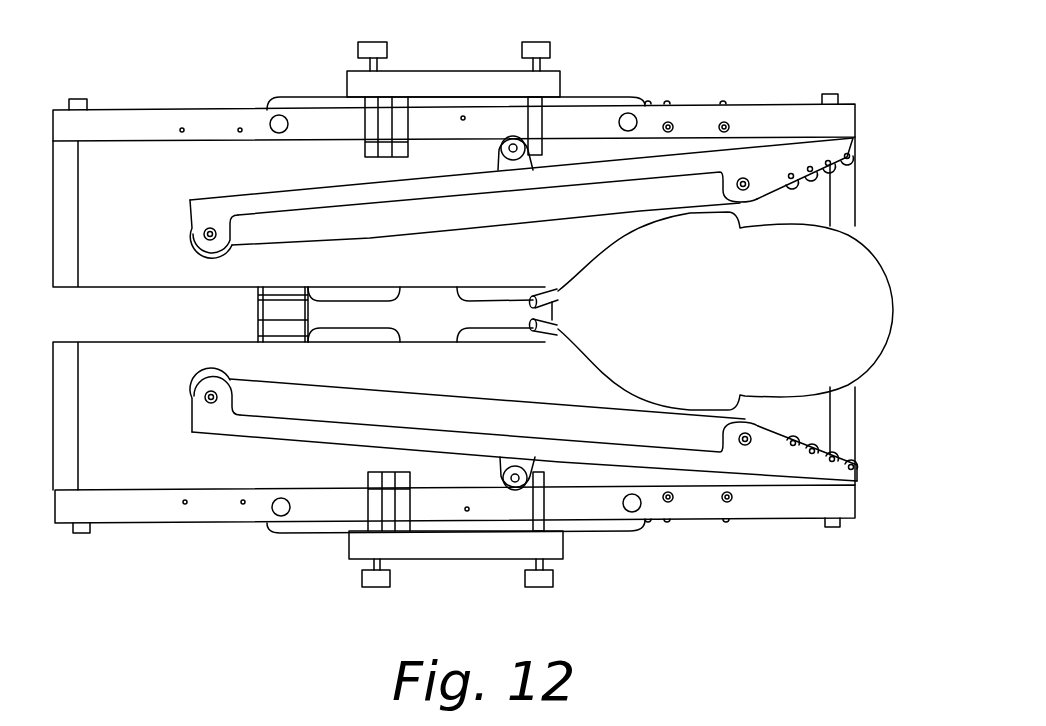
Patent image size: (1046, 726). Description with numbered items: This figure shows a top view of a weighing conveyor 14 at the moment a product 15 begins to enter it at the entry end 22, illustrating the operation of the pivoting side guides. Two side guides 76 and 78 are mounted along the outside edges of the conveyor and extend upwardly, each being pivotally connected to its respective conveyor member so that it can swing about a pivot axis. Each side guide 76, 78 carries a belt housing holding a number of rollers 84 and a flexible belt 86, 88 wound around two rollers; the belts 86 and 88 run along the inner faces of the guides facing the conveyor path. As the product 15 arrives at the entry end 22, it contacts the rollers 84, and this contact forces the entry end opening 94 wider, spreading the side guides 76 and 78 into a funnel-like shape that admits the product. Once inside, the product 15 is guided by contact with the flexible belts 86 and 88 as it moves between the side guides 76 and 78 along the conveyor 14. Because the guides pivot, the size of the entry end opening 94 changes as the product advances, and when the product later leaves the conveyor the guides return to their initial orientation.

The weighing conveyor 14 is at (847, 205).
The product 15 is at (723, 307).
The entry end 22 is at (855, 412).
The side guide 76 is at (765, 455).
The side guide 78 is at (765, 162).
The rollers 84 is at (853, 156).
The flexible belt 86 is at (572, 415).
The flexible belt 88 is at (593, 207).
The entry end opening 94 is at (897, 334).